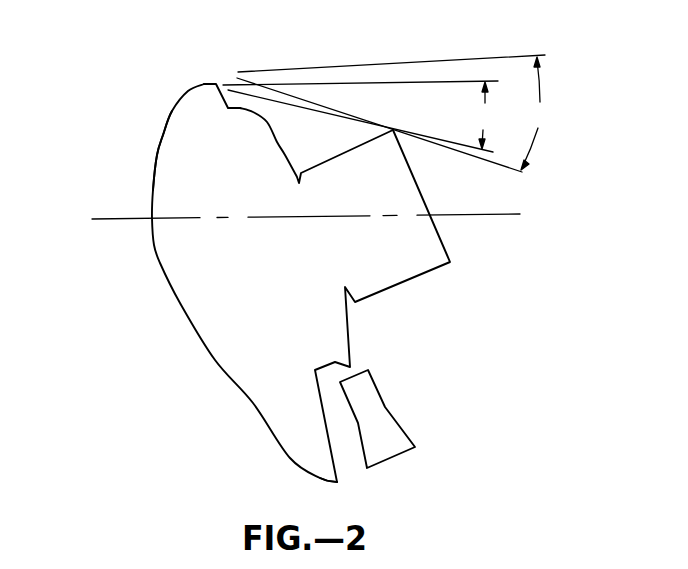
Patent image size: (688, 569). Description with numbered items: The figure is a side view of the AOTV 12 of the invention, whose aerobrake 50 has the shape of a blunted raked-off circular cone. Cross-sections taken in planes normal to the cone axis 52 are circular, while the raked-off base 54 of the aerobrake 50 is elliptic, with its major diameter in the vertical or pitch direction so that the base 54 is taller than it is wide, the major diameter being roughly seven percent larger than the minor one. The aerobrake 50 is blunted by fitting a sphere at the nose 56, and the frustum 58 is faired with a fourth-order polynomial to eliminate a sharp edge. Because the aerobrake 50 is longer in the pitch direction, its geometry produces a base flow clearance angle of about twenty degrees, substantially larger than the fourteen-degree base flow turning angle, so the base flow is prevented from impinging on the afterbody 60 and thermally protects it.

The AOTV 12 is at (311, 273).
The aerobrake 50 is at (215, 360).
The cone axis 52 is at (130, 218).
The base 54 is at (337, 482).
The nose 56 is at (150, 183).
The frustum 58 is at (206, 85).
The afterbody 60 is at (447, 253).